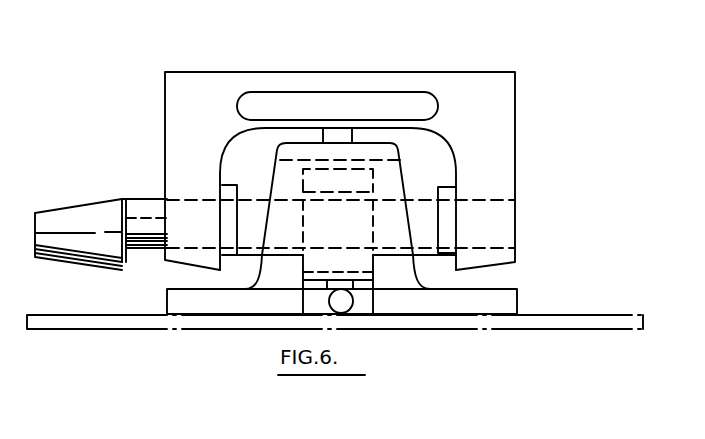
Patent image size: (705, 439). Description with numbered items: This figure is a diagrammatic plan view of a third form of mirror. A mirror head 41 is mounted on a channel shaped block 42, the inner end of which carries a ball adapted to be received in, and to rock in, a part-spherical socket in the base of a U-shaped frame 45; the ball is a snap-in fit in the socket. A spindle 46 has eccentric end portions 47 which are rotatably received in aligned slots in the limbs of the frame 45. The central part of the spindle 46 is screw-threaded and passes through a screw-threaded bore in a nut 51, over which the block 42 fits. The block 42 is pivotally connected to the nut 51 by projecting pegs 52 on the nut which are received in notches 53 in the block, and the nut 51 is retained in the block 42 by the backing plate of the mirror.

The mirror head 41 is at (428, 320).
The channel shaped block 42 is at (480, 302).
The U-shaped frame 45 is at (473, 98).
The spindle 46 is at (253, 213).
The eccentric end portions 47 is at (146, 225).
The nut 51 is at (373, 281).
The projecting pegs 52 is at (327, 302).
The notches 53 is at (348, 316).